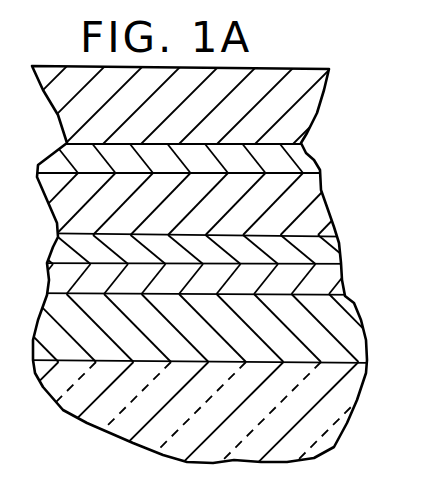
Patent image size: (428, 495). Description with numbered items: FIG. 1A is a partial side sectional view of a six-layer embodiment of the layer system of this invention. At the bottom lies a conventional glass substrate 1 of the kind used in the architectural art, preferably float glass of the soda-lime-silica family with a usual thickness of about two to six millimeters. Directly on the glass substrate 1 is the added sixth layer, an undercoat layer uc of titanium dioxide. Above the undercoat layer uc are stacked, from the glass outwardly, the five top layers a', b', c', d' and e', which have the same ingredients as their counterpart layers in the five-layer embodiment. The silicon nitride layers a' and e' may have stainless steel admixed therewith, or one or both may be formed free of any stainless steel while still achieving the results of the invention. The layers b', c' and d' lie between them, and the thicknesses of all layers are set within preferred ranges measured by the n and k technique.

The top silicon nitride layer e' is at (190, 105).
The fourth layer d' is at (200, 161).
The third layer c' is at (199, 205).
The second layer b' is at (199, 252).
The lower silicon nitride layer a' is at (201, 281).
The undercoat layer uc is at (198, 328).
The glass substrate 1 is at (100, 420).